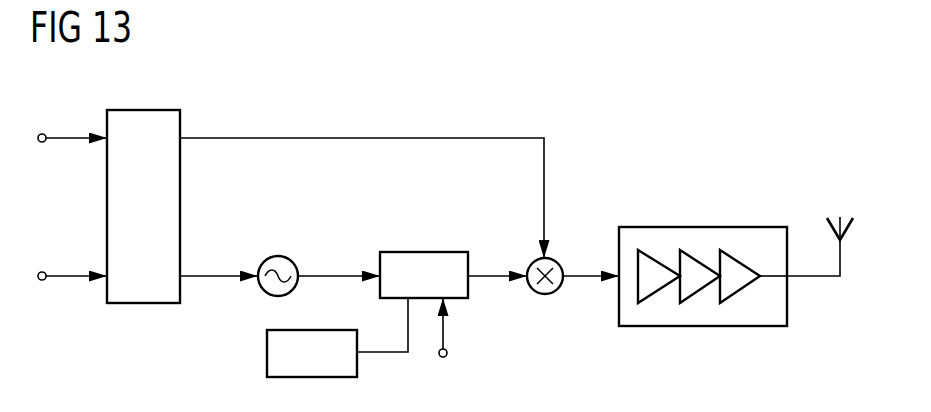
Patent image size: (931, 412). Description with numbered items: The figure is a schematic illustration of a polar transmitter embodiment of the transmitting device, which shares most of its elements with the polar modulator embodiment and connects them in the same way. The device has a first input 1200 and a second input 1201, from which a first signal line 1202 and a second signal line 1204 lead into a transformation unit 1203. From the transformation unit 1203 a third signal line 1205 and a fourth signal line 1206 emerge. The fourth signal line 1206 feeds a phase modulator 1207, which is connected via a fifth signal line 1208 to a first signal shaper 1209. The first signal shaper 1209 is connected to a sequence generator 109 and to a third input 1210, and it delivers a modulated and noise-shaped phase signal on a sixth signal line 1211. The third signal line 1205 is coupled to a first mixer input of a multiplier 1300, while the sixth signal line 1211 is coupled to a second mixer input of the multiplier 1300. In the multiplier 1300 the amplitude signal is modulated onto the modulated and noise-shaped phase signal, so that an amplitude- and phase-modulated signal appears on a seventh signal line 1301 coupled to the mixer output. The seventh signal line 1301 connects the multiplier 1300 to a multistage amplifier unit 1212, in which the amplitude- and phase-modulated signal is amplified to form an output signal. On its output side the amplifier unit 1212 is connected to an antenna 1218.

The sequence generator 109 is at (267, 355).
The first input 1200 is at (42, 142).
The second input 1201 is at (42, 280).
The first signal line 1202 is at (68, 135).
The transformation unit 1203 is at (143, 108).
The second signal line 1204 is at (68, 272).
The third signal line 1205 is at (362, 137).
The fourth signal line 1206 is at (213, 274).
The phase modulator 1207 is at (278, 255).
The fifth signal line 1208 is at (333, 274).
The first signal shaper 1209 is at (425, 250).
The third input 1210 is at (447, 356).
The sixth signal line 1211 is at (489, 274).
The multistage amplifier unit 1212 is at (697, 327).
The antenna 1218 is at (840, 214).
The multiplier 1300 is at (543, 295).
The seventh signal line 1301 is at (577, 274).